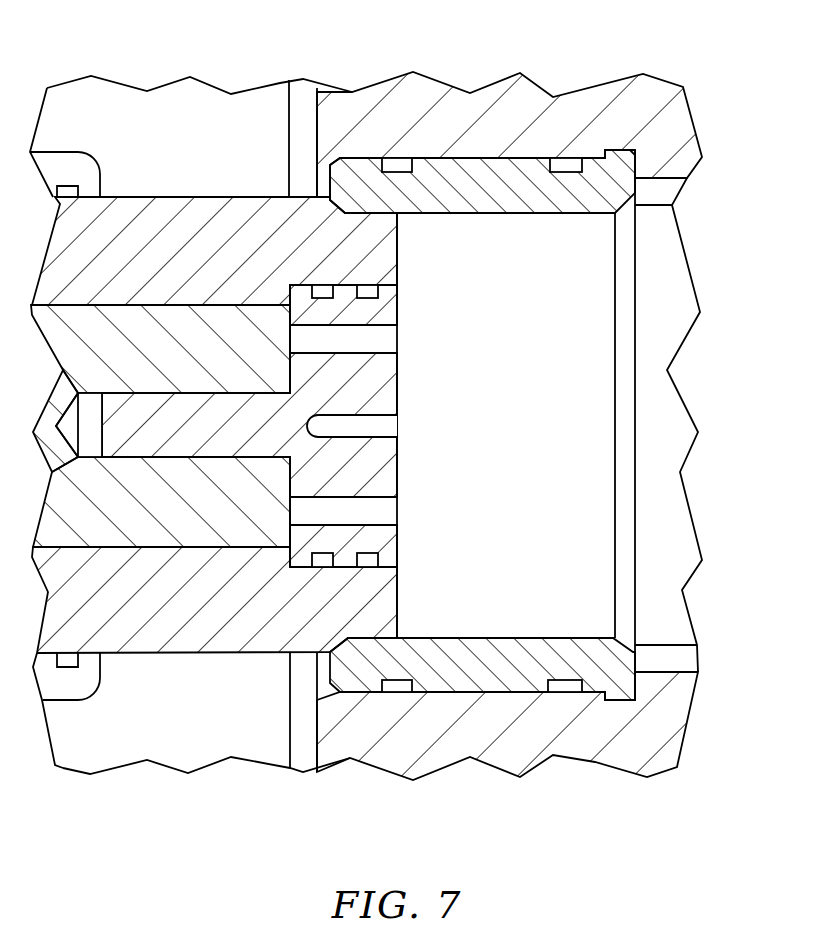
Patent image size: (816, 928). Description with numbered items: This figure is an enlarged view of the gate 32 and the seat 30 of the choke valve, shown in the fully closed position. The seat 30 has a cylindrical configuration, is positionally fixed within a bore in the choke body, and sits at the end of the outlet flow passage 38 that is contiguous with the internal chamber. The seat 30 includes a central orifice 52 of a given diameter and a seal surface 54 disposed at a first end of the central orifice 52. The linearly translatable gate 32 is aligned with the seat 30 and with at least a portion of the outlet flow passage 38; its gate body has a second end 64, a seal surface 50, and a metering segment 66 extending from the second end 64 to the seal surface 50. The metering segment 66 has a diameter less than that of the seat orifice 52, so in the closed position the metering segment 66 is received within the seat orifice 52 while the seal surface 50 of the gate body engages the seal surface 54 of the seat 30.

The seat 30 is at (542, 632).
The gate 32 is at (420, 457).
The outlet flow passage 38 is at (658, 253).
The seal surface 50 is at (343, 205).
The central orifice 52 is at (471, 553).
The seal surface 54 is at (342, 642).
The second end 64 is at (397, 385).
The metering segment 66 is at (373, 207).